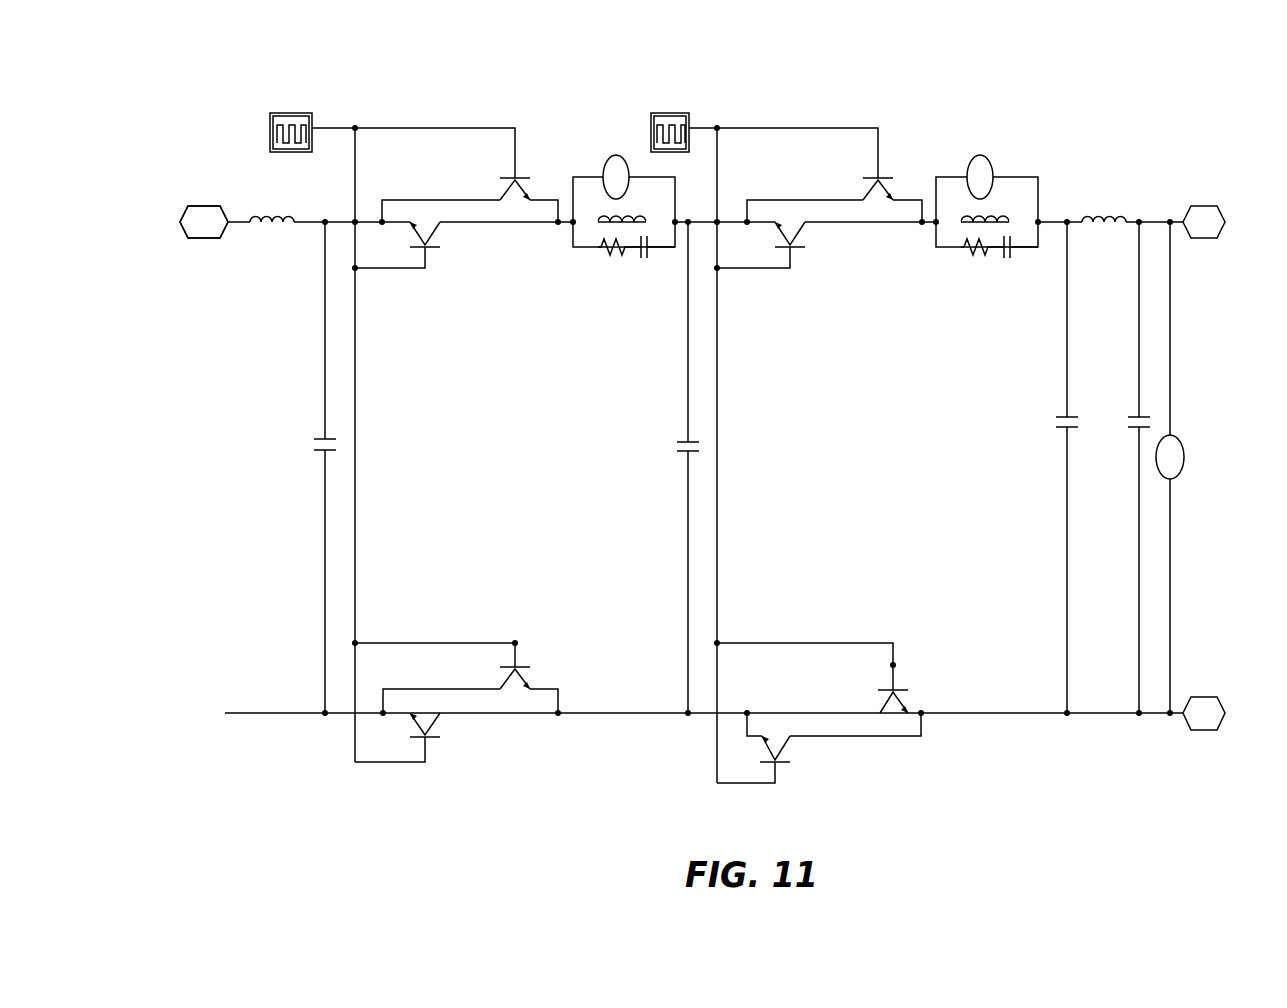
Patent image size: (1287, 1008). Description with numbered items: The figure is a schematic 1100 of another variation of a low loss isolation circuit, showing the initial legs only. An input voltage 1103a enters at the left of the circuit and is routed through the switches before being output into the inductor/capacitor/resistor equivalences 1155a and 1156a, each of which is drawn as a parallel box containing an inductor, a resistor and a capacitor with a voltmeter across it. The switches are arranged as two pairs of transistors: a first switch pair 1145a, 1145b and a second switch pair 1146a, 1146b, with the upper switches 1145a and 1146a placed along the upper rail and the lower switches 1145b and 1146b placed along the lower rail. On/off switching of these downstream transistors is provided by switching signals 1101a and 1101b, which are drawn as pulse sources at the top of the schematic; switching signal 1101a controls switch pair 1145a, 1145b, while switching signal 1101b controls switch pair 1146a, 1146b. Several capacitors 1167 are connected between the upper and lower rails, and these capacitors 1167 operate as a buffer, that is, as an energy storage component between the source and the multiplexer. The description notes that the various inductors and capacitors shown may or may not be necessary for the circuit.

The schematic 1100 is at (1117, 63).
The switching signal 1101a is at (268, 128).
The switching signal 1101b is at (650, 125).
The input voltage 1103a is at (196, 240).
The switch pair 1145a is at (467, 267).
The switch pair 1145b is at (508, 730).
The switch pair 1146a is at (840, 280).
The switch pair 1146b is at (880, 742).
The inductor/capacitor/resistor equivalence 1155a is at (613, 268).
The inductor/capacitor/resistor equivalence 1156a is at (982, 262).
The capacitor 1167 is at (340, 463).